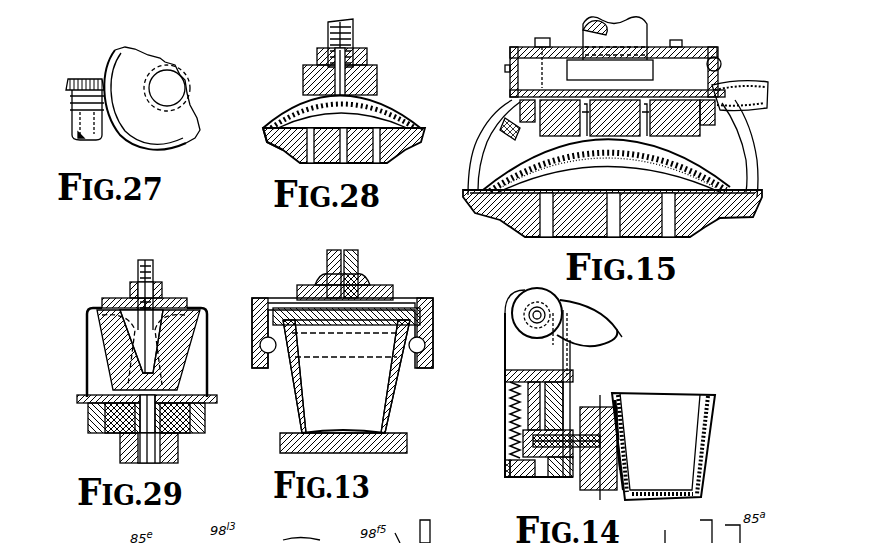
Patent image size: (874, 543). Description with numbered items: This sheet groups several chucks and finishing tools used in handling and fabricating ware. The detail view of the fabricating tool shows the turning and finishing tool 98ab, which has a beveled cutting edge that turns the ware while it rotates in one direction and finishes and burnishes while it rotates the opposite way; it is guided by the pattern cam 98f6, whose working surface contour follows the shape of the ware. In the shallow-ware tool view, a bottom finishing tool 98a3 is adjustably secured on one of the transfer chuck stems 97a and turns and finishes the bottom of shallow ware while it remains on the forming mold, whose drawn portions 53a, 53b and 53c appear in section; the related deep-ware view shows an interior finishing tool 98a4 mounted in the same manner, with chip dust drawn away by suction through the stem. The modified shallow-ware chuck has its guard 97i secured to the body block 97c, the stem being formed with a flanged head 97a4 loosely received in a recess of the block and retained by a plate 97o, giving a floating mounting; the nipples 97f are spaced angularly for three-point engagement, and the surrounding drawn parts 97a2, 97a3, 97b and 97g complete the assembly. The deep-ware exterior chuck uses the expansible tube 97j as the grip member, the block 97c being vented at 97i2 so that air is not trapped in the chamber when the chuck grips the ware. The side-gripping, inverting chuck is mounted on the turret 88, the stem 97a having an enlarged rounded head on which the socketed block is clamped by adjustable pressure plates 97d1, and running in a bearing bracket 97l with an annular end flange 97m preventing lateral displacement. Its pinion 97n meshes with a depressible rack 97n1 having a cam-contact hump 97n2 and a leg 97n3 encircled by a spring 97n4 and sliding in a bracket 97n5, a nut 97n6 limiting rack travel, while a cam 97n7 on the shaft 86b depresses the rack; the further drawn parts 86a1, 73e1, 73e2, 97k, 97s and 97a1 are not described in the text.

In FIG. 27, the turning and finishing tool 98ab is at (77, 79).
In FIG. 27, the pattern cam 98f6 is at (66, 107).
In FIG. 28, the stem 97a is at (355, 33).
In FIG. 15, the stem 97a is at (647, 35).
In FIG. 29, the stem 97a is at (153, 263).
In FIG. 13, the stem 97a is at (340, 253).
In FIG. 14, the stem 97a is at (615, 438).
In FIG. 28, the bottom finishing tool 98a3 is at (377, 72).
In FIG. 28, the dome band 53b is at (337, 100).
In FIG. 15, the dome band 53b is at (633, 152).
In FIG. 29, the dome band 53b is at (100, 307).
In FIG. 28, the base shoulder 53c is at (263, 133).
In FIG. 28, the base 53a is at (300, 157).
In FIG. 15, the base 53a is at (713, 217).
In FIG. 29, the base 53a is at (87, 363).
In FIG. 15, the flanged head 97a4 is at (610, 70).
In FIG. 15, the plate 97o is at (700, 48).
In FIG. 15, the body block 97c is at (723, 82).
In FIG. 13, the body block 97c is at (303, 293).
In FIG. 15, the curved rim strip 97b is at (750, 85).
In FIG. 15, the outer shell leg / cup 97a2 is at (512, 97).
In FIG. 14, the outer shell leg / cup 97a2 is at (615, 397).
In FIG. 15, the inner shell leg / plate 97a3 is at (507, 117).
In FIG. 13, the inner shell leg / plate 97a3 is at (387, 307).
In FIG. 15, the guard 97i is at (743, 123).
In FIG. 15, the inner shell arc 97g is at (733, 143).
In FIG. 15, the nipples 97f is at (556, 150).
In FIG. 29, the nut / cup wall 97a1 is at (142, 262).
In FIG. 14, the nut / cup wall 97a1 is at (615, 450).
In FIG. 29, the interior finishing tool 98a4 is at (167, 300).
In FIG. 13, the vent 97i2 is at (373, 277).
In FIG. 13, the expansible tube 97j is at (270, 367).
In FIG. 14, the turret 88 is at (566, 300).
In FIG. 14, the pivot 86a1 is at (522, 295).
In FIG. 14, the shaft 86b is at (527, 310).
In FIG. 14, the bracket 73e1 is at (537, 340).
In FIG. 14, the depressible rack 97n1 is at (573, 373).
In FIG. 14, the cam 97n7 is at (618, 335).
In FIG. 14, the cam-contact hump 97n2 is at (550, 367).
In FIG. 14, the pin or leg 97n3 is at (512, 392).
In FIG. 14, the spring 97n4 is at (512, 400).
In FIG. 14, the bracket 97n5 is at (512, 425).
In FIG. 14, the nut 97n6 is at (512, 448).
In FIG. 14, the annular end flange 97m is at (530, 468).
In FIG. 14, the bearing block or bracket 97l is at (523, 477).
In FIG. 14, the bracket foot 73e2 is at (523, 480).
In FIG. 14, the pinion 97n is at (560, 477).
In FIG. 14, the adjustable pressure plates 97d1 is at (586, 407).
In FIG. 14, the plate 97k is at (597, 490).
In FIG. 14, the cup rim 97s is at (615, 417).